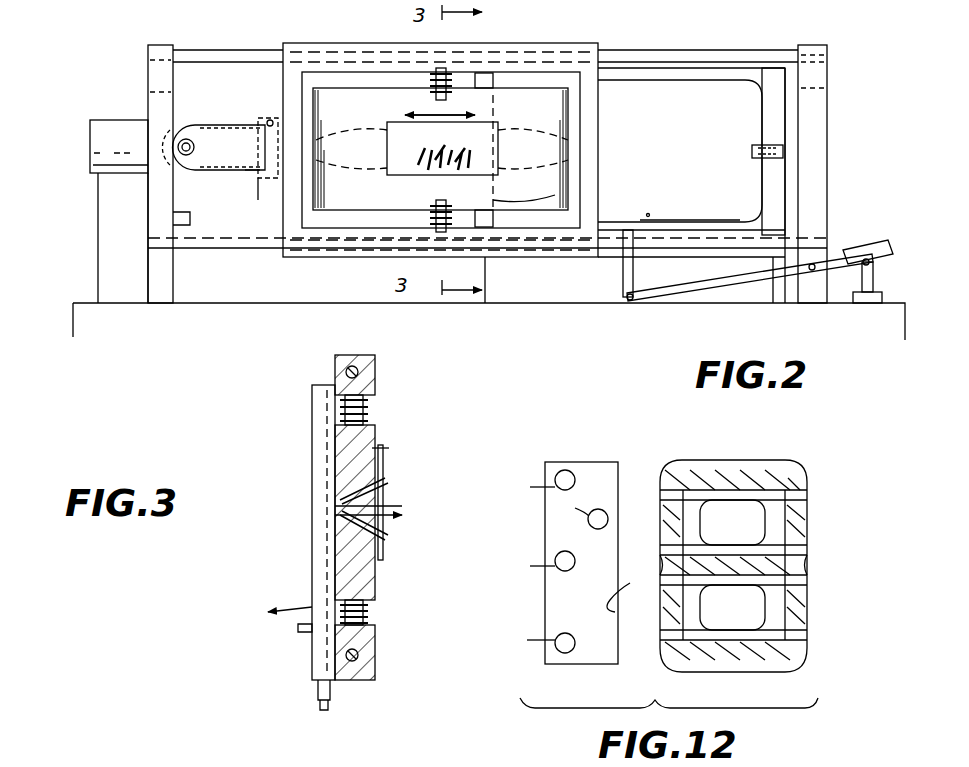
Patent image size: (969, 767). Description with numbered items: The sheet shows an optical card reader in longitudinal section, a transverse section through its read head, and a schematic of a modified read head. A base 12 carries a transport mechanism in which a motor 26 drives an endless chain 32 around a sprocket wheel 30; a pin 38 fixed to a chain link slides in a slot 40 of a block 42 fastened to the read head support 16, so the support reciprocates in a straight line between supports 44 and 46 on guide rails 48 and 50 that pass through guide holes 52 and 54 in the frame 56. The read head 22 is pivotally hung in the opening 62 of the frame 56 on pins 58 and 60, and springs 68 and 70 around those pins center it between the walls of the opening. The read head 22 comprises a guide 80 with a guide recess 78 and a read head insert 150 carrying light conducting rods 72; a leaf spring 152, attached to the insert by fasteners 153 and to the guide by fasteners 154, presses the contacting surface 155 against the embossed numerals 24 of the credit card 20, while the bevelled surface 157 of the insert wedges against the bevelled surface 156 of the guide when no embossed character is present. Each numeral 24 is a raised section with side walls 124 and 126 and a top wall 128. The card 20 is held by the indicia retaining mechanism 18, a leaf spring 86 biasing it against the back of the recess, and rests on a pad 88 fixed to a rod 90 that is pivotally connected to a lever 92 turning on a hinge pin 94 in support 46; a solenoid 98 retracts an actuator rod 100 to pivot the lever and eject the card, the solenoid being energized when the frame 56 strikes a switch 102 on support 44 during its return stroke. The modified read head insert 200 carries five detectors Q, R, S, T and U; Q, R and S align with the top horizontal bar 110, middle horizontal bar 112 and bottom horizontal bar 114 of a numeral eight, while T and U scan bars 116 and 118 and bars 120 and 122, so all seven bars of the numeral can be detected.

In FIG. 2, the base 12 is at (225, 303).
In FIG. 2, the read head support 16 is at (565, 45).
In FIG. 2, the indicia retaining mechanism 18 is at (787, 115).
In FIG. 2, the credit card 20 is at (682, 116).
In FIG. 2, the read head 22 is at (350, 185).
In FIG. 2, the embossed numeral 24 is at (650, 150).
In FIG. 3, the embossed numeral 24 is at (340, 518).
In FIG. 2, the motor 26 is at (112, 125).
In FIG. 2, the sprocket wheel 30 is at (205, 145).
In FIG. 2, the chain 32 is at (200, 140).
In FIG. 2, the pin 38 is at (270, 118).
In FIG. 2, the slot 40 is at (262, 165).
In FIG. 2, the block 42 is at (265, 182).
In FIG. 2, the support 44 is at (150, 210).
In FIG. 2, the support 46 is at (818, 190).
In FIG. 2, the guide rail 48 is at (215, 50).
In FIG. 3, the guide rail 48 is at (360, 372).
In FIG. 2, the guide rail 50 is at (195, 248).
In FIG. 3, the guide rail 50 is at (375, 675).
In FIG. 2, the guide hole 52 is at (515, 52).
In FIG. 2, the guide hole 54 is at (370, 247).
In FIG. 2, the frame 56 is at (318, 45).
In FIG. 2, the pin 58 is at (435, 78).
In FIG. 3, the pin 58 is at (362, 400).
In FIG. 2, the pin 60 is at (432, 214).
In FIG. 3, the pin 60 is at (360, 605).
In FIG. 2, the opening 62 is at (345, 72).
In FIG. 3, the spring 68 is at (368, 408).
In FIG. 3, the spring 70 is at (365, 615).
In FIG. 2, the light conducting rod 72 is at (460, 145).
In FIG. 3, the light conducting rod 72 is at (402, 506).
In FIG. 2, the guide recess 78 is at (535, 190).
In FIG. 3, the guide recess 78 is at (340, 510).
In FIG. 2, the guide 80 is at (778, 70).
In FIG. 2, the leaf spring 86 is at (762, 160).
In FIG. 2, the pad 88 is at (648, 222).
In FIG. 2, the rod 90 is at (625, 275).
In FIG. 2, the lever 92 is at (718, 290).
In FIG. 2, the hinge pin 94 is at (815, 275).
In FIG. 2, the solenoid 98 is at (868, 300).
In FIG. 2, the actuator rod 100 is at (875, 248).
In FIG. 2, the switch 102 is at (190, 218).
In FIG. 12, the top horizontal bar 110 is at (720, 475).
In FIG. 12, the middle horizontal bar 112 is at (790, 545).
In FIG. 12, the bottom horizontal bar 114 is at (760, 660).
In FIG. 12, the bar 116 is at (650, 490).
In FIG. 12, the bar 118 is at (790, 498).
In FIG. 12, the bar 120 is at (663, 640).
In FIG. 12, the bar 122 is at (790, 622).
In FIG. 3, the side wall 124 is at (338, 512).
In FIG. 3, the side wall 126 is at (274, 597).
In FIG. 3, the top wall 128 is at (345, 525).
In FIG. 2, the read head insert 150 is at (495, 122).
In FIG. 3, the read head insert 150 is at (337, 514).
In FIG. 3, the leaf spring 152 is at (385, 450).
In FIG. 3, the fastener 153 is at (385, 478).
In FIG. 3, the fastener 154 is at (380, 435).
In FIG. 3, the contacting surface 155 is at (335, 506).
In FIG. 3, the bevelled surface 156 is at (343, 505).
In FIG. 3, the bevelled surface 157 is at (340, 500).
In FIG. 12, the read head insert 200 is at (572, 462).